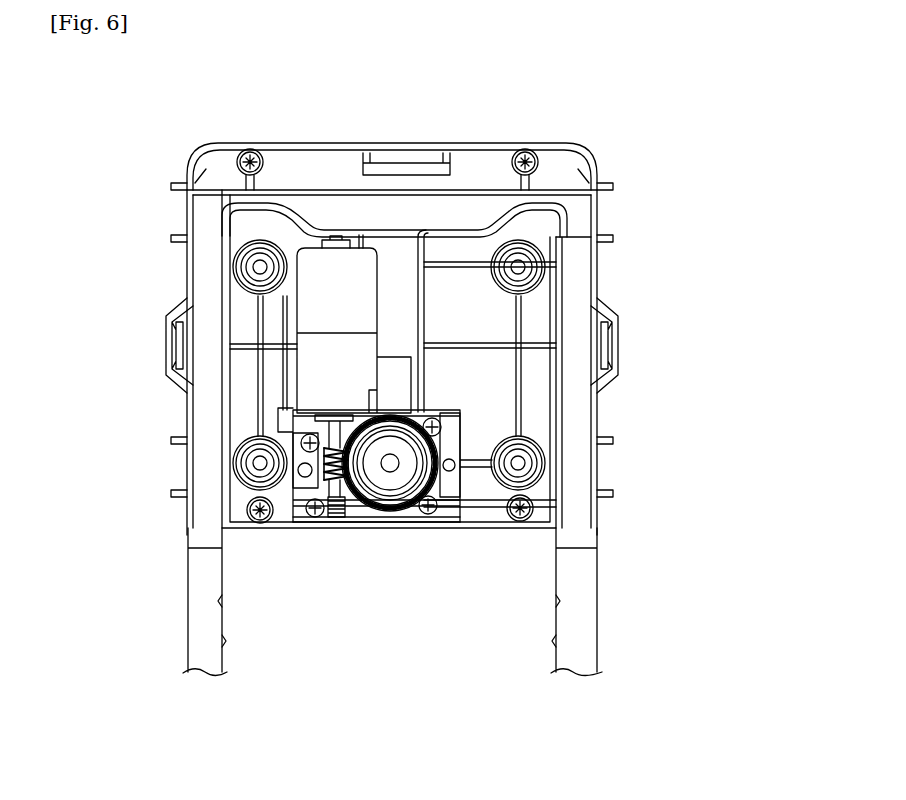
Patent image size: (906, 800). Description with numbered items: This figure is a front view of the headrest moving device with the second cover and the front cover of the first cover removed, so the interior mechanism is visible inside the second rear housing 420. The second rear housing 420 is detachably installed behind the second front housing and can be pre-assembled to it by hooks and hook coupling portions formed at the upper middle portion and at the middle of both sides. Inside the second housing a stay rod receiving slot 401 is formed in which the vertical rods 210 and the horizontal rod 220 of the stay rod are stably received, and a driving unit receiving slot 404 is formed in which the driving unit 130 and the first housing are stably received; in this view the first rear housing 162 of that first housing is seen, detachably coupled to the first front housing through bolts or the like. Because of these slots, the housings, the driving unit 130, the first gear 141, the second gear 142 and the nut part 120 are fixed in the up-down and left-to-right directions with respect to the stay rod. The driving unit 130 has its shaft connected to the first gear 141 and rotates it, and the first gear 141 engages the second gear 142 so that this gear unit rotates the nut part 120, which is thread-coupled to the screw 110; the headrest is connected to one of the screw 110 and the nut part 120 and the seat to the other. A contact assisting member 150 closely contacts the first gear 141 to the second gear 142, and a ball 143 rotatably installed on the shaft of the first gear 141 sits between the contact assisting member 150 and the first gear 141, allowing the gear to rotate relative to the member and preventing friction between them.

The second rear housing 420 is at (183, 157).
The horizontal rod 220 is at (384, 208).
The stay rod receiving slot 401 is at (541, 223).
The driving unit receiving slot 404 is at (406, 316).
The vertical rod 210 is at (577, 392).
The driving unit 130 is at (320, 316).
The first gear 141 is at (318, 460).
The ball 143 is at (330, 490).
The contact assisting member 150 is at (337, 520).
The screw 110 is at (385, 480).
The first rear housing 162 is at (413, 522).
The nut part 120 is at (442, 505).
The second gear 142 is at (452, 482).